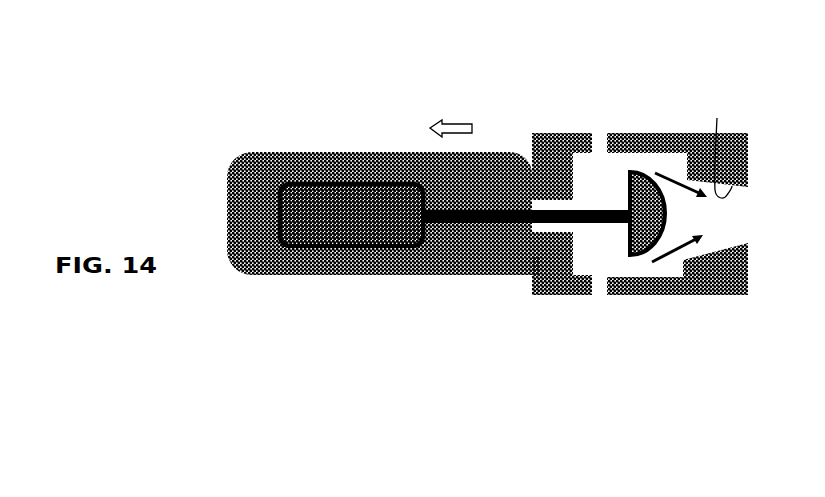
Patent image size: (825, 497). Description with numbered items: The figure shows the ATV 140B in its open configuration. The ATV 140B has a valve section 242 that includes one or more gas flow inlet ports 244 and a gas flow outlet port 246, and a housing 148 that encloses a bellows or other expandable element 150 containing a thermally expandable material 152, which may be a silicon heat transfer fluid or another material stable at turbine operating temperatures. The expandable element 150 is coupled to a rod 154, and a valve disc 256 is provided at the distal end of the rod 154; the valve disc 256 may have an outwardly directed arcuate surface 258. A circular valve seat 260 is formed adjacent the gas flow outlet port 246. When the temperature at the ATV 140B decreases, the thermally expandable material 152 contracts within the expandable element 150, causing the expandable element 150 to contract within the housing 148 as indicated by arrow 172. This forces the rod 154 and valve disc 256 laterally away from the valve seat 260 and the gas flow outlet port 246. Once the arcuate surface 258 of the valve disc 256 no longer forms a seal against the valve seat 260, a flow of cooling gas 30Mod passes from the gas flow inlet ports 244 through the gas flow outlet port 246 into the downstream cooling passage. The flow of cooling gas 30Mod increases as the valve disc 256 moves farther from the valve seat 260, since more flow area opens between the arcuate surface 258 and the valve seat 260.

The ATV 140B is at (216, 111).
The housing 148 is at (313, 277).
The expandable element 150 is at (333, 184).
The thermally expandable material 152 is at (351, 215).
The rod 154 is at (477, 224).
The arrow 172 is at (442, 118).
The gas flow inlet ports 244 is at (608, 126).
The valve section 242 is at (676, 126).
The flow of cooling gas 30Mod is at (563, 363).
The valve disc 256 is at (621, 257).
The arcuate surface 258 is at (676, 211).
The valve seat 260 is at (711, 146).
The gas flow outlet port 246 is at (759, 191).